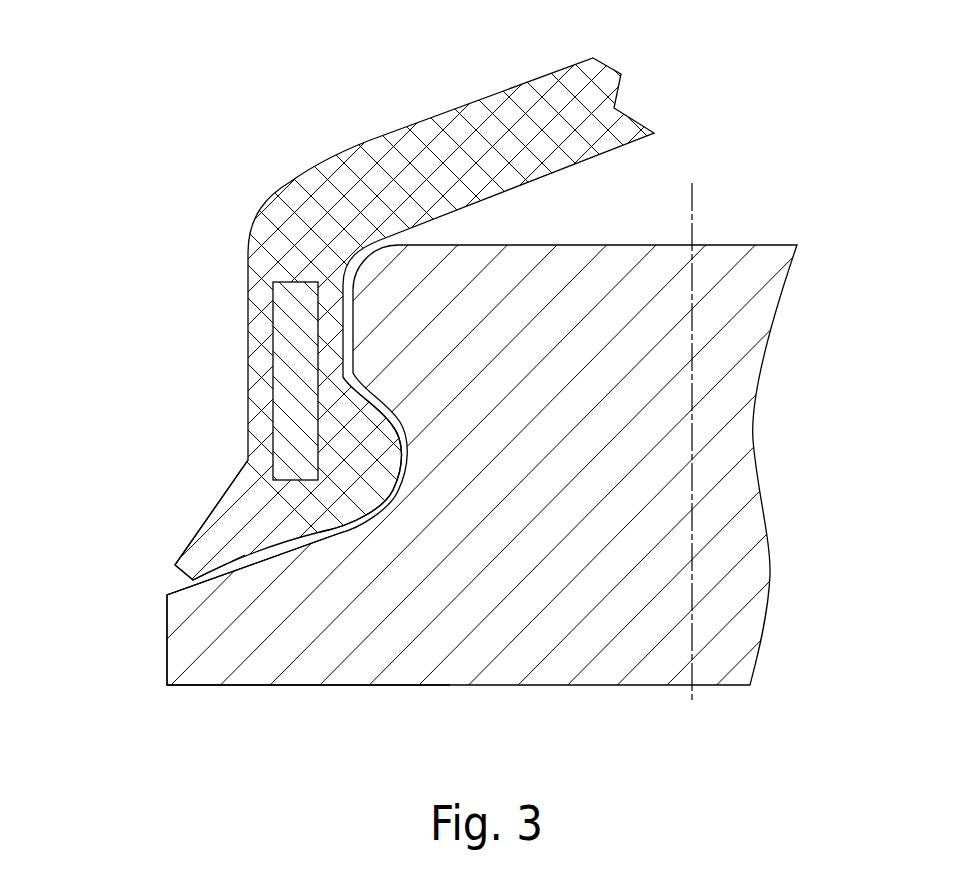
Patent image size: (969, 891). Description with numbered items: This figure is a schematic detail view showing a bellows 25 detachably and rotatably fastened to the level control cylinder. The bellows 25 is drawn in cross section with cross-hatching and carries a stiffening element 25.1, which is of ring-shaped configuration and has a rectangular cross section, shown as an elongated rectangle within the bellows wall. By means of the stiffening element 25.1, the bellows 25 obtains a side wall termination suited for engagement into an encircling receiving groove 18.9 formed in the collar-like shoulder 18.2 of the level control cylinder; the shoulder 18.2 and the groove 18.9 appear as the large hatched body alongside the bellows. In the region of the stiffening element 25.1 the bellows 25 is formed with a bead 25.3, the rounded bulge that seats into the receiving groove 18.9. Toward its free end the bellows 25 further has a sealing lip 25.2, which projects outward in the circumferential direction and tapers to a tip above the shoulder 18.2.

The bellows 25 is at (287, 215).
The stiffening element 25.1 is at (287, 362).
The sealing lip 25.2 is at (178, 566).
The bead 25.3 is at (313, 535).
The collar-like shoulder 18.2 is at (200, 633).
The receiving groove 18.9 is at (377, 515).